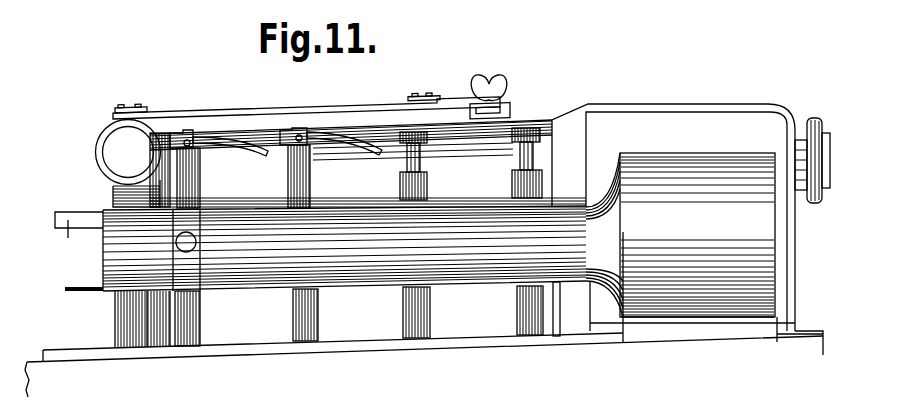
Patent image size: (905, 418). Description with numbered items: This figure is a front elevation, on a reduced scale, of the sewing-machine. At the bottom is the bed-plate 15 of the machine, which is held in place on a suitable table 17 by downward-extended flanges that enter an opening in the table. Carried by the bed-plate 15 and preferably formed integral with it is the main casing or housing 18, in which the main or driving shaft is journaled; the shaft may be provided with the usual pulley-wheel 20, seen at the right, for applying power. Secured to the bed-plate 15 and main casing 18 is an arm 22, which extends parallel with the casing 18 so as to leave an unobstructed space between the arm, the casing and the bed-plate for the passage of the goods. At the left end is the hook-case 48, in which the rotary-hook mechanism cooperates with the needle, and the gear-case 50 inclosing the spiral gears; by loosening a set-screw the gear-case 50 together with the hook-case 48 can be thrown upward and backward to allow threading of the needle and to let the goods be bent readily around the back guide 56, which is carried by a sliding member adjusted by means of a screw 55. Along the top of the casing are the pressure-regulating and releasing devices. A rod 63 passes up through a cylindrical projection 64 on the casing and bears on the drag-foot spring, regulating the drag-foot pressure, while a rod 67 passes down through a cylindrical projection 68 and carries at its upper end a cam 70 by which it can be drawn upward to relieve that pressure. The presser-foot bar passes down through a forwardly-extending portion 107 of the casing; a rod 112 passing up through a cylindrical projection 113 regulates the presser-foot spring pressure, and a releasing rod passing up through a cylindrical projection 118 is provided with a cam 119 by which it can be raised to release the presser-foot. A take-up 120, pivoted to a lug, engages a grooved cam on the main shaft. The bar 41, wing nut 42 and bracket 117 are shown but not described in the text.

The bed-plate 15 is at (367, 334).
The table 17 is at (610, 348).
The main casing or housing 18 is at (368, 163).
The pulley-wheel 20 is at (813, 118).
The arm 22 is at (344, 248).
The bar 41 is at (280, 108).
The wing nut 42 is at (487, 80).
The hook-case 48 is at (100, 153).
The gear-case 50 is at (115, 193).
The screw 55 is at (197, 242).
The back guide 56 is at (79, 239).
The rod 63 is at (408, 163).
The cylindrical projection 64 is at (425, 313).
The rod 67 is at (187, 133).
The cylindrical projection 68 is at (192, 305).
The cam 70 is at (230, 143).
The forwardly-extending portion 107 is at (128, 313).
The rod 112 is at (528, 157).
The cylindrical projection 113 is at (520, 317).
The bracket 117 is at (300, 130).
The cylindrical projection 118 is at (294, 322).
The cam 119 is at (340, 137).
The take-up 120 is at (78, 284).